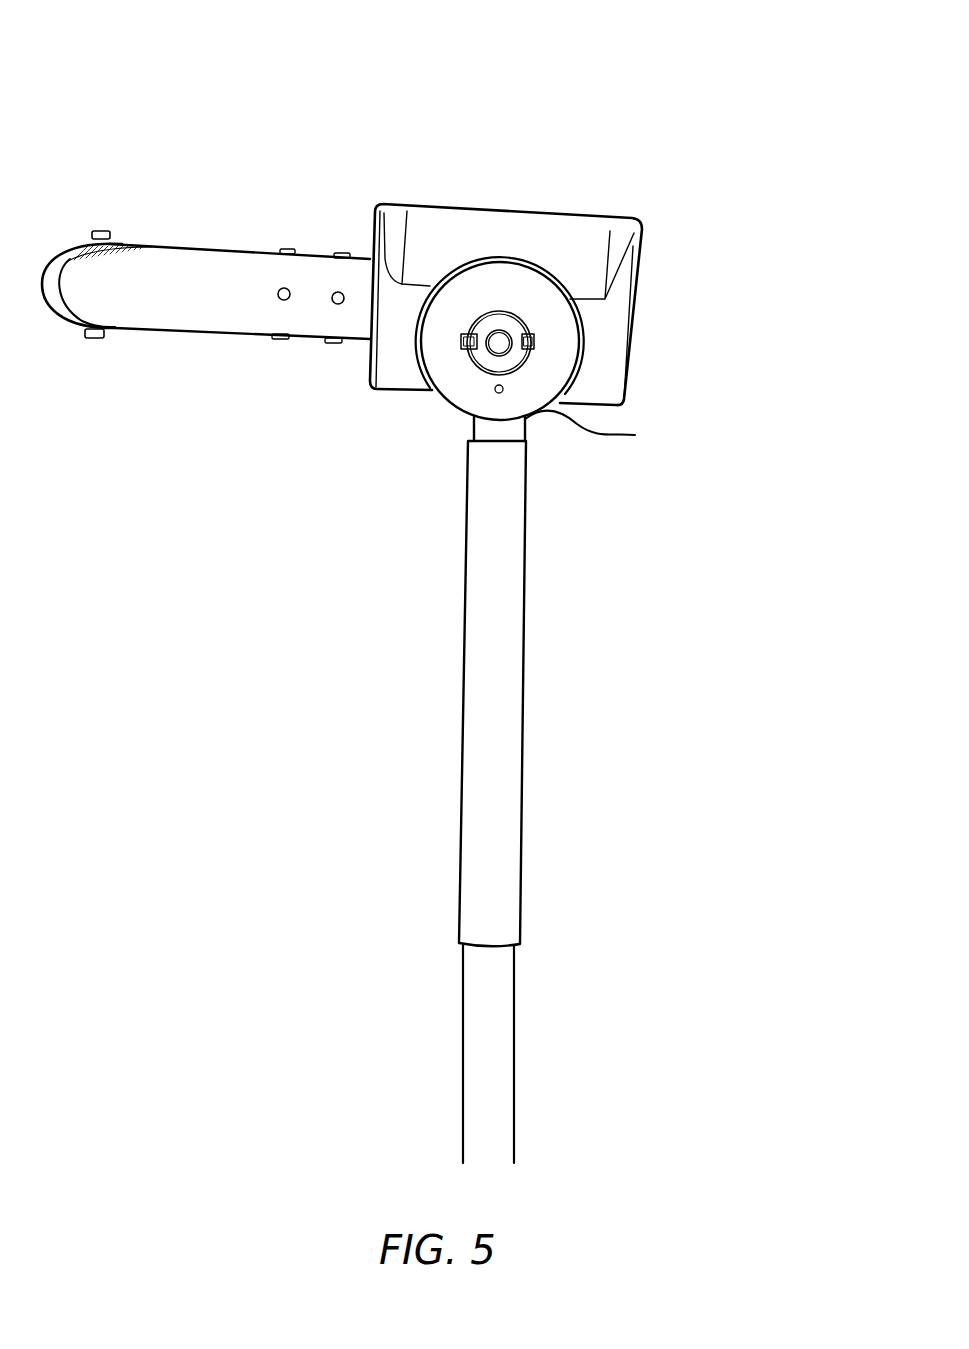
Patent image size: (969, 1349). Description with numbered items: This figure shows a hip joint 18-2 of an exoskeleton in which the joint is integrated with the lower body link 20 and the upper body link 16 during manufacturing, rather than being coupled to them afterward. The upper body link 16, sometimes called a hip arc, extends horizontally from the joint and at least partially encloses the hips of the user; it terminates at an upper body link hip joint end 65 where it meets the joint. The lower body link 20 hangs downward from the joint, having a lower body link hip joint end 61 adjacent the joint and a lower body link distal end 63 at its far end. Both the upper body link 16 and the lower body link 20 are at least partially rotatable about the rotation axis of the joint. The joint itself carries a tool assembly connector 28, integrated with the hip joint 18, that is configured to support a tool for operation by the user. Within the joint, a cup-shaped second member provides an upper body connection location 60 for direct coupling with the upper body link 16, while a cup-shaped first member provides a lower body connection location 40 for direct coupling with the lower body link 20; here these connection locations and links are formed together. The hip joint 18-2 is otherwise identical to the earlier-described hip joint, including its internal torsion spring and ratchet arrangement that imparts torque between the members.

The hip joint 18-2 is at (258, 28).
The upper body link 16 is at (88, 300).
The upper body link hip joint end 65 is at (347, 365).
The tool assembly connector 28 is at (590, 258).
The upper body connection location 60 is at (417, 356).
The hip joint 18 is at (553, 345).
The lower body link hip joint end 61 is at (440, 429).
The lower body connection location 40 is at (591, 429).
The lower body link 20 is at (560, 1173).
The lower body link distal end 63 is at (437, 1152).